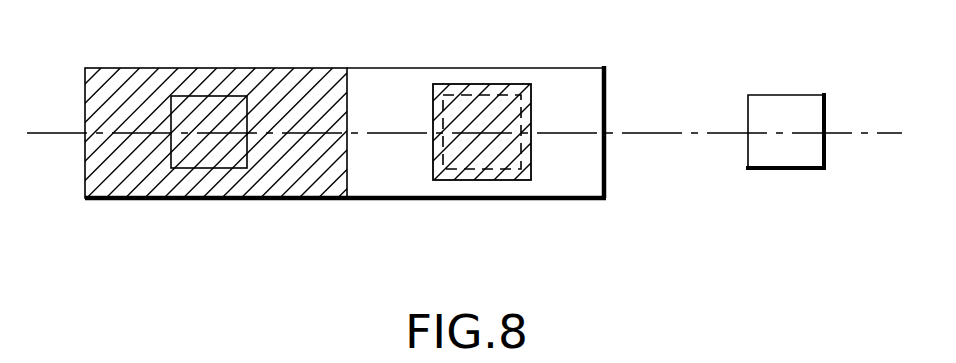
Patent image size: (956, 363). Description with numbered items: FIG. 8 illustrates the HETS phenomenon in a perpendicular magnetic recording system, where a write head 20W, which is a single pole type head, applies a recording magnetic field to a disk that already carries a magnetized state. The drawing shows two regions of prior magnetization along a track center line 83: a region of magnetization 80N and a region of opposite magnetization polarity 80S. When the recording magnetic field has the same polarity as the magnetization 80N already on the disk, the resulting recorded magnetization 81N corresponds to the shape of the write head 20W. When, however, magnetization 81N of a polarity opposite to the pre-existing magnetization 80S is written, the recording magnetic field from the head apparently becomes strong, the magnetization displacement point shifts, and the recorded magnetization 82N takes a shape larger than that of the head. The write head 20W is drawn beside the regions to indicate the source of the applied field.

The magnetization 80N is at (310, 80).
The magnetization polarity 80S is at (406, 80).
The magnetization 81N is at (208, 96).
The recorded magnetization 82N is at (488, 180).
The track center line 83 is at (672, 128).
The write head 20W is at (790, 170).